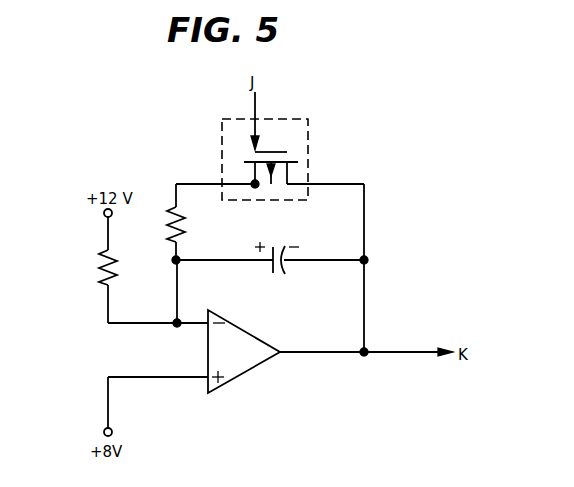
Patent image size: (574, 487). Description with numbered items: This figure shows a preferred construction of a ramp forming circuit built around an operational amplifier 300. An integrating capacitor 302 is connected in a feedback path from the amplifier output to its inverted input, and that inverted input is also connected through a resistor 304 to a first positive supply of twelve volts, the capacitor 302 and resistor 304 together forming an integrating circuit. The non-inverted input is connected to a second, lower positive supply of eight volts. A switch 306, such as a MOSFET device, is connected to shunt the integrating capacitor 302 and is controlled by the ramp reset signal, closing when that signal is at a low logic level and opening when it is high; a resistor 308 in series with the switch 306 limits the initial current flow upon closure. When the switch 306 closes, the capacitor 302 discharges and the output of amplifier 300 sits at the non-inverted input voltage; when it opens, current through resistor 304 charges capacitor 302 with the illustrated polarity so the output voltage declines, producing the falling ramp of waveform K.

The operational amplifier 300 is at (263, 342).
The integrating capacitor 302 is at (285, 271).
The resistor 304 is at (100, 282).
The switch 306 is at (306, 118).
The resistor 308 is at (175, 211).